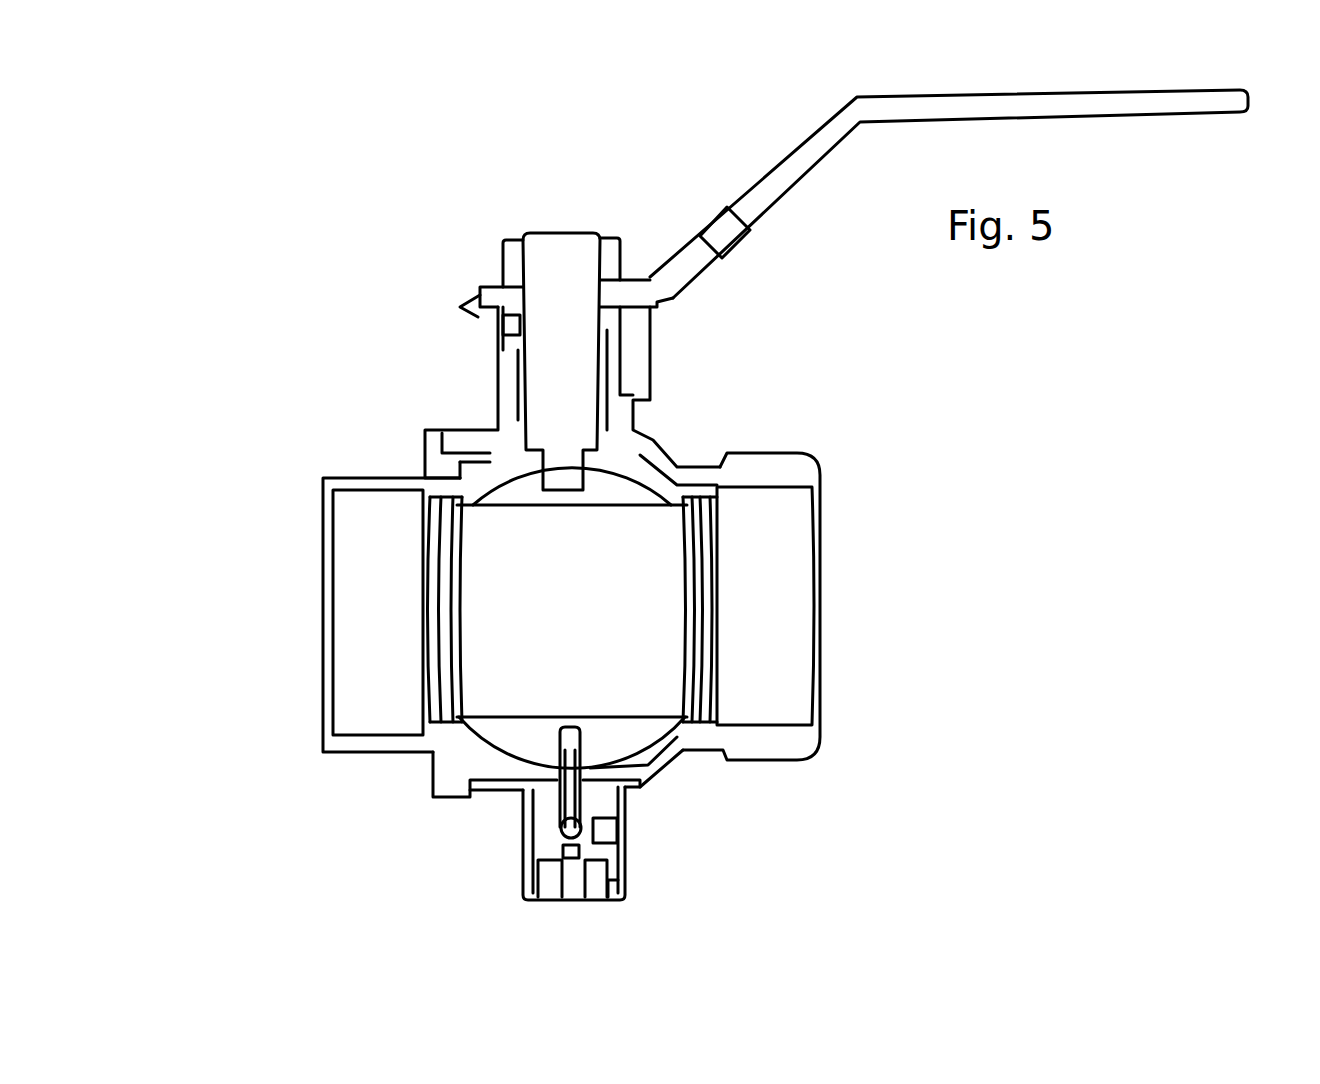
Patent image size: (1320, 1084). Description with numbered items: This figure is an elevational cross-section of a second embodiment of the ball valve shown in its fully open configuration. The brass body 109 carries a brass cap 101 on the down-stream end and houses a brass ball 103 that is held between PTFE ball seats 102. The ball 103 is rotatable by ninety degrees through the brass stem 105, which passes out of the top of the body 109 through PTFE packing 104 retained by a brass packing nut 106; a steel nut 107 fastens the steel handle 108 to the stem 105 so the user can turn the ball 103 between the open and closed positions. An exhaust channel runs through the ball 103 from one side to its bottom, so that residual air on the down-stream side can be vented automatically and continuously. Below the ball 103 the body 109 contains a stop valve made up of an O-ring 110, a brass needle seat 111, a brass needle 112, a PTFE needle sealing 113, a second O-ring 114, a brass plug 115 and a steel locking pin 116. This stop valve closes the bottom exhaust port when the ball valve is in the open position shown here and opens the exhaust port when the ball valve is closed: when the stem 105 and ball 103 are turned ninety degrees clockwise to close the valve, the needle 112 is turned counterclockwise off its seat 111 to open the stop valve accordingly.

The cap 101 is at (383, 647).
The ball seats 102 is at (443, 497).
The ball 103 is at (512, 487).
The packing 104 is at (520, 400).
The stem 105 is at (560, 380).
The packing nut 106 is at (601, 256).
The nut 107 is at (606, 250).
The handle 108 is at (798, 145).
The body 109 is at (762, 588).
The O-ring 110 is at (543, 790).
The needle seat 111 is at (548, 813).
The needle 112 is at (565, 825).
The needle sealing 113 is at (575, 855).
The O-ring 114 is at (597, 897).
The plug 115 is at (620, 897).
The locking pin 116 is at (622, 840).